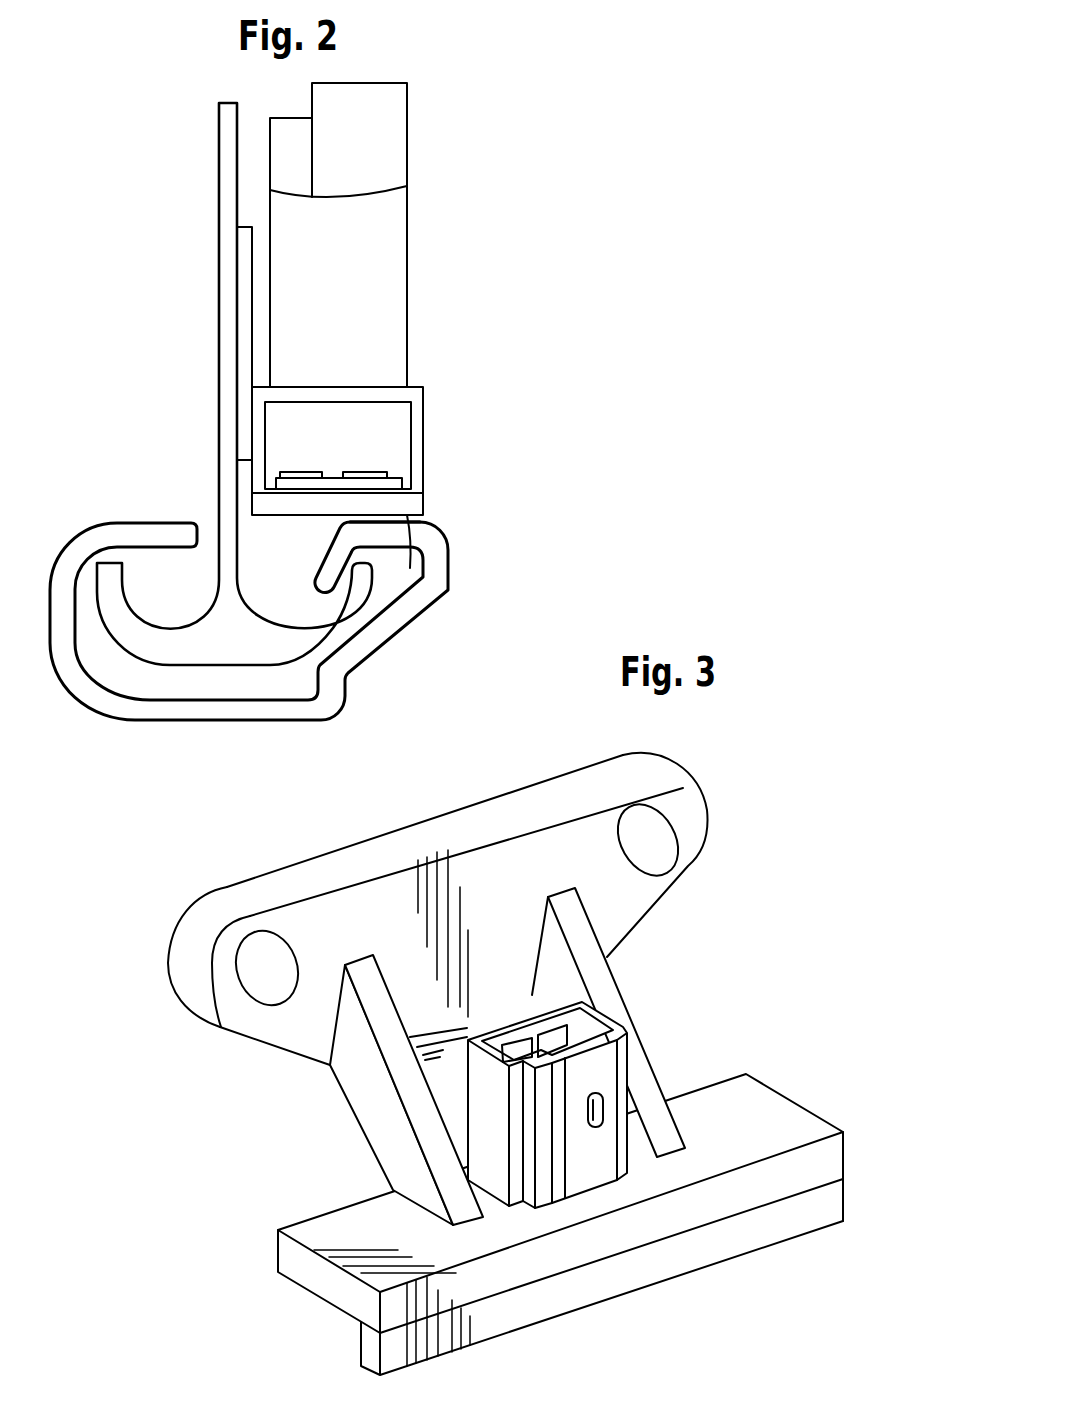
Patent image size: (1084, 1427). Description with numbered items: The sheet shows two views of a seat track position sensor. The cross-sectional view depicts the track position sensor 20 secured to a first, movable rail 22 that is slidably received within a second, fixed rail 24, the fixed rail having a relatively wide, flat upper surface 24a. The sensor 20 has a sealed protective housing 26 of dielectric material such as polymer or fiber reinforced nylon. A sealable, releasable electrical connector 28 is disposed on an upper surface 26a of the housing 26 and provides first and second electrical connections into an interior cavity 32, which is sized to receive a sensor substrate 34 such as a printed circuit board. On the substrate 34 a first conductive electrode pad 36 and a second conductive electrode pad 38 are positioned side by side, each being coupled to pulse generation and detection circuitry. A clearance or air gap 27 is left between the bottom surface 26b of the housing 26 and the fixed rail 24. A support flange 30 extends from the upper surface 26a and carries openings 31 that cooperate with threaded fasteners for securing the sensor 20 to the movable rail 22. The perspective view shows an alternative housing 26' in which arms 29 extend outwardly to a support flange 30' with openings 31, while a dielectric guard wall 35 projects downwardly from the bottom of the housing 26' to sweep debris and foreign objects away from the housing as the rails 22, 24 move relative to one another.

In FIG. 2, the track position sensor 20 is at (462, 152).
In FIG. 2, the first movable rail 22 is at (222, 189).
In FIG. 2, the second fixed rail 24 is at (400, 630).
In FIG. 2, the upper surface of second rail 24a is at (360, 518).
In FIG. 2, the housing 26 is at (370, 434).
In FIG. 2, the upper surface of housing 26a is at (383, 378).
In FIG. 2, the bottom surface of housing 26b is at (410, 565).
In FIG. 2, the air gap 27 is at (432, 518).
In FIG. 2, the electrical connector 28 is at (388, 207).
In FIG. 3, the electrical connector 28 is at (608, 1070).
In FIG. 2, the support flange 30 is at (198, 343).
In FIG. 2, the interior cavity 32 is at (282, 408).
In FIG. 2, the sensor substrate 34 is at (330, 468).
In FIG. 2, the first conductive electrode pad 36 is at (366, 465).
In FIG. 2, the second conductive electrode pad 38 is at (296, 476).
In FIG. 3, the support flange 30' is at (451, 900).
In FIG. 3, the openings 31 is at (652, 848).
In FIG. 3, the arms 29 is at (392, 1149).
In FIG. 3, the housing 26' is at (560, 1189).
In FIG. 3, the dielectric guard wall 35 is at (710, 1246).